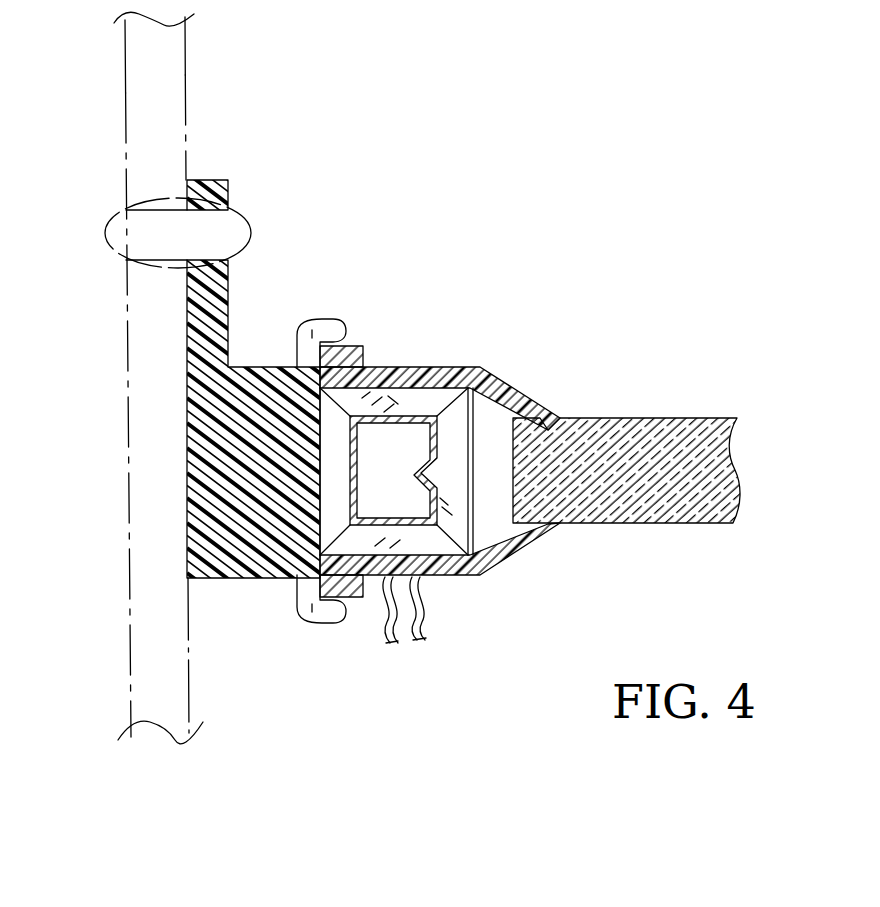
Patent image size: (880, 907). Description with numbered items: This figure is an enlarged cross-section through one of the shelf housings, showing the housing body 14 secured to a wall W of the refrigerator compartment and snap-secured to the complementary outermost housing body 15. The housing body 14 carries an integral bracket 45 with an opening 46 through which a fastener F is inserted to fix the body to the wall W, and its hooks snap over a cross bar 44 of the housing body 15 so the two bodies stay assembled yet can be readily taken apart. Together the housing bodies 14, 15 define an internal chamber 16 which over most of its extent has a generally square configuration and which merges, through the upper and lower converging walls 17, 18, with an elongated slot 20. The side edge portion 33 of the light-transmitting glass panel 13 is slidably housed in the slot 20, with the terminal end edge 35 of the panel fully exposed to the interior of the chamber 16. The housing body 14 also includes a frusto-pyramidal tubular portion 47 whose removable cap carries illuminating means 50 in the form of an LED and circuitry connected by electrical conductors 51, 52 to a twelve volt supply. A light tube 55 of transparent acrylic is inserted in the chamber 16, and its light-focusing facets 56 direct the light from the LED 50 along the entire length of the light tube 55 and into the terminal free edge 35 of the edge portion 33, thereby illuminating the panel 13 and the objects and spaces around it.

The wall W is at (167, 80).
The fastener F is at (110, 230).
The light-transmitting panel 13 is at (697, 409).
The housing body 14 is at (471, 425).
The housing body 15 is at (258, 563).
The internal chamber 16 is at (481, 412).
The upper converging wall 17 is at (519, 388).
The lower converging wall 18 is at (520, 545).
The elongated slot 20 is at (545, 419).
The side edge portion 33 is at (590, 492).
The terminal end edge 35 is at (513, 500).
The cross bar 44 is at (328, 327).
The bracket 45 is at (193, 297).
The opening 46 is at (213, 213).
The frusto-pyramidal tubular portion 47 is at (378, 377).
The illuminating means 50 is at (411, 374).
The electrical conductor 51 is at (388, 643).
The electrical conductor 52 is at (433, 627).
The light tube 55 is at (429, 545).
The light-focusing facet 56 is at (427, 481).